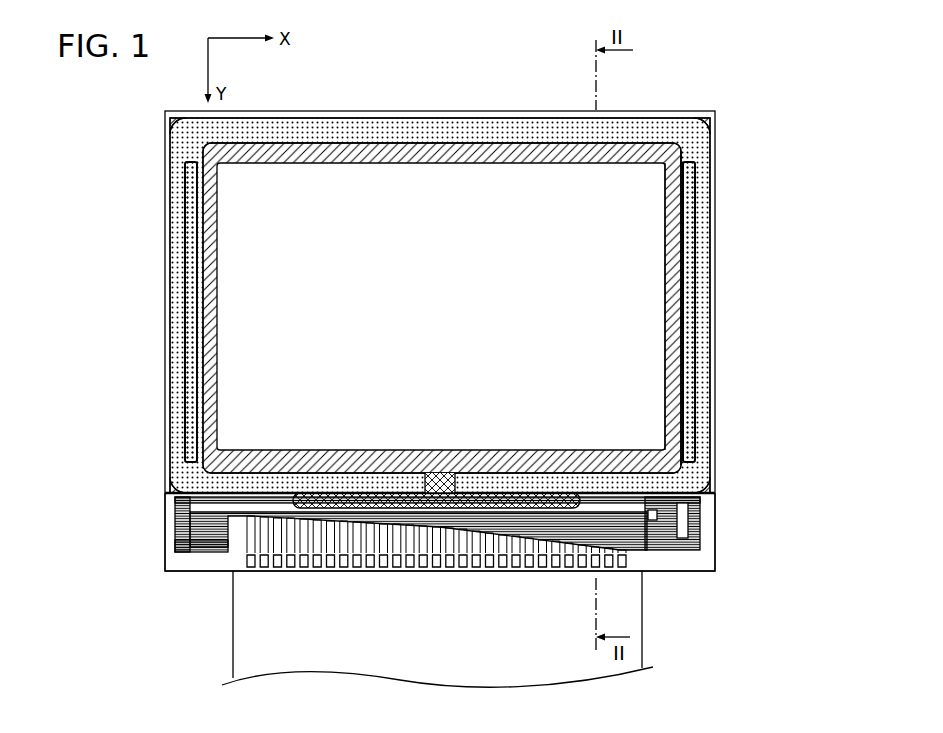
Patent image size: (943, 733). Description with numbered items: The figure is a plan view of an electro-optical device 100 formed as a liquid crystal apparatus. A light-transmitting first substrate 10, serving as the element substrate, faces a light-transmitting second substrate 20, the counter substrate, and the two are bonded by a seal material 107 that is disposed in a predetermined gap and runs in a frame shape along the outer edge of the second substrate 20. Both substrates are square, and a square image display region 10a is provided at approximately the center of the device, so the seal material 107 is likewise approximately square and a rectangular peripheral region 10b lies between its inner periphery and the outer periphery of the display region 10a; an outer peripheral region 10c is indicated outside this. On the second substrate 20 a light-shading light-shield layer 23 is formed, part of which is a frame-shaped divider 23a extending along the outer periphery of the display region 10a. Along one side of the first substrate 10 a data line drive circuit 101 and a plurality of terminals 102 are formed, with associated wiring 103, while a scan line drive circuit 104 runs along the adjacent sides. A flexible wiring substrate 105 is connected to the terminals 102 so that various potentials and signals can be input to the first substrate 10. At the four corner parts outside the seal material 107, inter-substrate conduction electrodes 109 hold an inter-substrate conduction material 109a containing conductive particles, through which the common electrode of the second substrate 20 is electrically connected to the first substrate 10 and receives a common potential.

The electro-optical device 100 is at (668, 95).
The first substrate 10 is at (204, 580).
The image display region 10a is at (452, 309).
The peripheral region 10b is at (696, 350).
The outer peripheral region 10c is at (722, 420).
The second substrate 20 is at (287, 497).
The light-shield layer 23 is at (499, 312).
The divider 23a is at (620, 208).
The data line drive circuit 101 is at (484, 548).
The terminals 102 is at (456, 566).
The wiring 103 is at (640, 510).
The scan line drive circuit 104 is at (698, 393).
The flexible wiring substrate 105 is at (298, 656).
The seal material 107 is at (640, 243).
The inter-substrate conduction electrodes 109 is at (443, 300).
The inter-substrate conduction material 109a is at (180, 126).